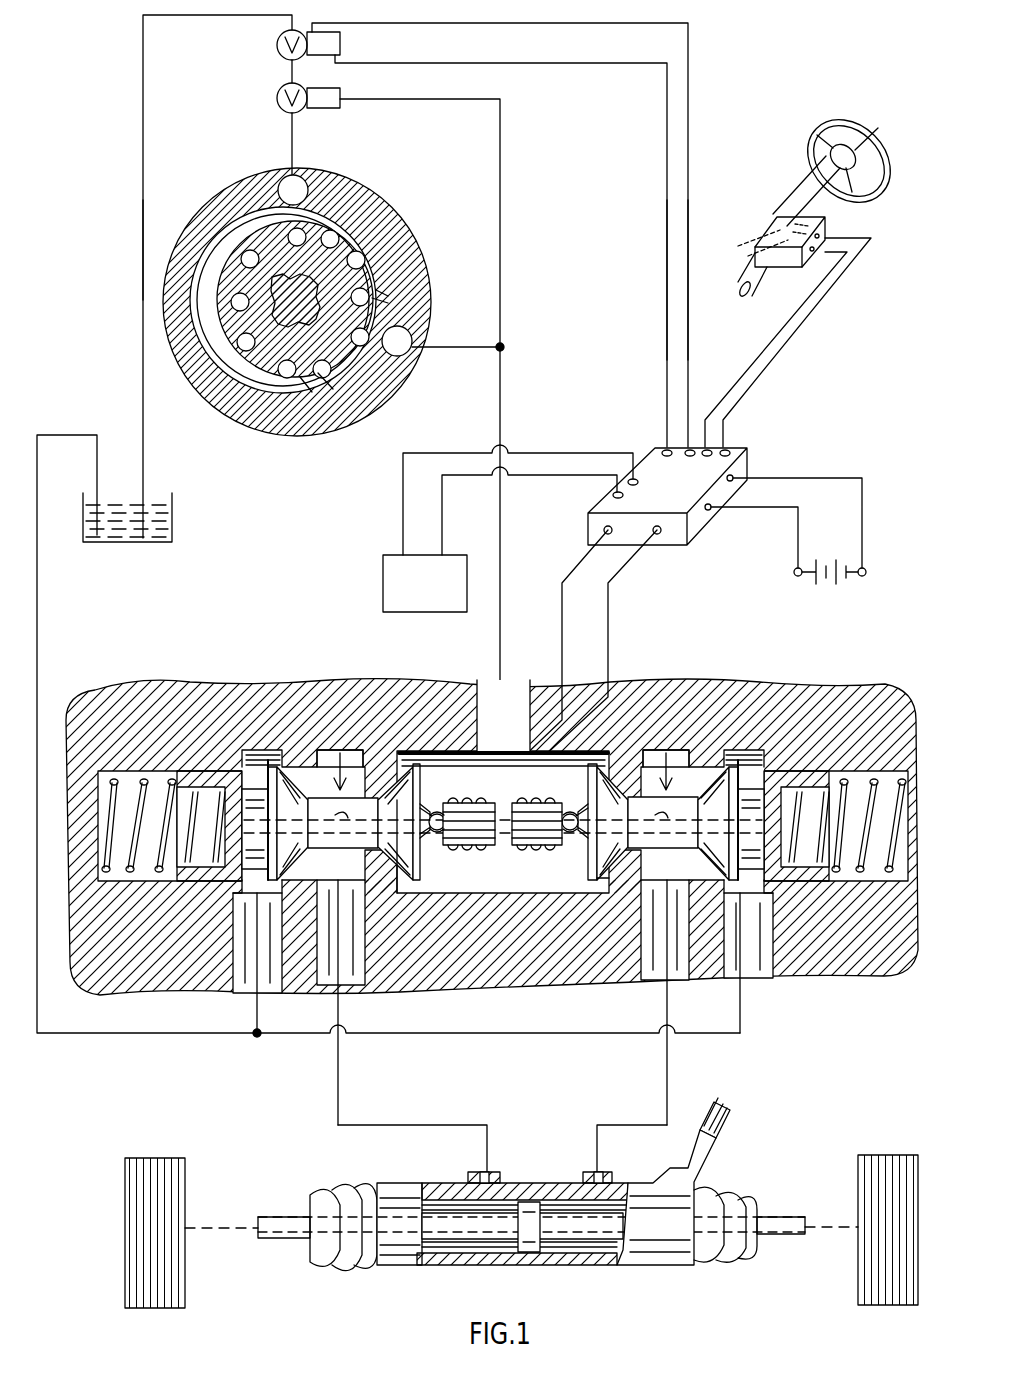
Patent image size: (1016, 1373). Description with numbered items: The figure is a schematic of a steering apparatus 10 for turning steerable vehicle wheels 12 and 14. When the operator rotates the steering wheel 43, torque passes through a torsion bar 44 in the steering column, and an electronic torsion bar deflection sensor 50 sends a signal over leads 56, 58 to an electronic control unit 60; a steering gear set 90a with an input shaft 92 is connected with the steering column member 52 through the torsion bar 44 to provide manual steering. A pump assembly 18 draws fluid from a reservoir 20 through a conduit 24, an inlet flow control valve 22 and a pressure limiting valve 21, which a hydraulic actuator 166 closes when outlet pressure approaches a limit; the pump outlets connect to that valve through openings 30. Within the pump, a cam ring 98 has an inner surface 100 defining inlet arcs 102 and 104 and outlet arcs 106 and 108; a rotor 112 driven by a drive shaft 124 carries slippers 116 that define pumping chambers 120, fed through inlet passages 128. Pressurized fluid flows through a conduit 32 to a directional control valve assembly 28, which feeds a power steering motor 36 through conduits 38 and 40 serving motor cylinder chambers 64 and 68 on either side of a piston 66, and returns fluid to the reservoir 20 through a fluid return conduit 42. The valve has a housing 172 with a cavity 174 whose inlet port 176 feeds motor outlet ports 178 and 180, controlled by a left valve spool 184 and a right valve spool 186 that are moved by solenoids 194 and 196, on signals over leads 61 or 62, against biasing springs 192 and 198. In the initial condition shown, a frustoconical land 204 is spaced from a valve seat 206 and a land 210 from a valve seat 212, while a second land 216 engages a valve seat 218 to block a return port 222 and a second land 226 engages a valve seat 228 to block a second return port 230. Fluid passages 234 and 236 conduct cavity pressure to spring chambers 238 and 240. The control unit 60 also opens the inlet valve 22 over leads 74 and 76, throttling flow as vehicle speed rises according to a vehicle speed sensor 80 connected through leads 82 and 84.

The steering apparatus 10 is at (184, 128).
The steerable vehicle wheel 12 is at (150, 1175).
The steerable vehicle wheel 14 is at (895, 1172).
The pump assembly 18 is at (320, 307).
The reservoir 20 is at (172, 508).
The pressure limiting valve 21 is at (277, 100).
The inlet flow control valve 22 is at (277, 48).
The conduit 24 is at (141, 247).
The directional control valve assembly 28 is at (509, 867).
The openings 30 is at (412, 340).
The conduit 32 is at (498, 660).
The power steering motor 36 is at (495, 1228).
The conduit 38 is at (338, 1090).
The conduit 40 is at (667, 1082).
The fluid return conduit 42 is at (68, 1036).
The steering wheel 43 is at (832, 128).
The torsion bar 44 is at (745, 246).
The torque sensor 50 is at (770, 226).
The steering column member 52 is at (805, 190).
The lead 56 is at (780, 333).
The lead 58 is at (815, 305).
The electronic control unit 60 is at (712, 518).
The lead 61 is at (560, 597).
The lead 62 is at (608, 605).
The motor cylinder chamber 64 is at (450, 1262).
The piston 66 is at (528, 1258).
The motor cylinder chamber 68 is at (578, 1245).
The lead 74 is at (666, 274).
The lead 76 is at (688, 297).
The vehicle speed sensor 80 is at (383, 580).
The lead 82 is at (592, 452).
The lead 84 is at (566, 474).
The steering gear set 90a is at (617, 1265).
The input shaft 92 is at (748, 286).
The cam ring 98 is at (408, 280).
The radially inner circumferential surface 100 is at (314, 400).
The inlet arc 102 is at (305, 183).
The inlet arc 104 is at (338, 393).
The outlet arc 106 is at (252, 260).
The outlet arc 108 is at (400, 300).
The cylindrical rotor 112 is at (385, 292).
The pumping elements 116 is at (362, 258).
The pumping chambers 120 is at (300, 245).
The drive shaft 124 is at (295, 289).
The inlet passages 128 is at (215, 385).
The hydraulic actuator 166 is at (337, 70).
The housing 172 is at (175, 700).
The cavity 174 is at (385, 768).
The inlet port 176 is at (442, 790).
The motor outlet port 178 is at (345, 960).
The motor outlet port 180 is at (640, 930).
The left valve spool 184 is at (338, 752).
The right valve spool 186 is at (666, 752).
The biasing spring 192 is at (112, 790).
The solenoid 194 is at (462, 860).
The solenoid 196 is at (542, 860).
The biasing spring 198 is at (866, 880).
The frustoconical land 204 is at (422, 860).
The valve seat 206 is at (398, 895).
The frustoconical land 210 is at (590, 818).
The valve seat 212 is at (603, 882).
The second frustoconical land 216 is at (258, 760).
The valve seat 218 is at (288, 768).
The return port 222 is at (233, 960).
The second frustoconical land 226 is at (752, 790).
The valve seat 228 is at (740, 765).
The second fluid return port 230 is at (745, 960).
The fluid passage 234 is at (343, 835).
The fluid passage 236 is at (668, 835).
The spring chamber 238 is at (130, 870).
The spring chamber 240 is at (903, 880).